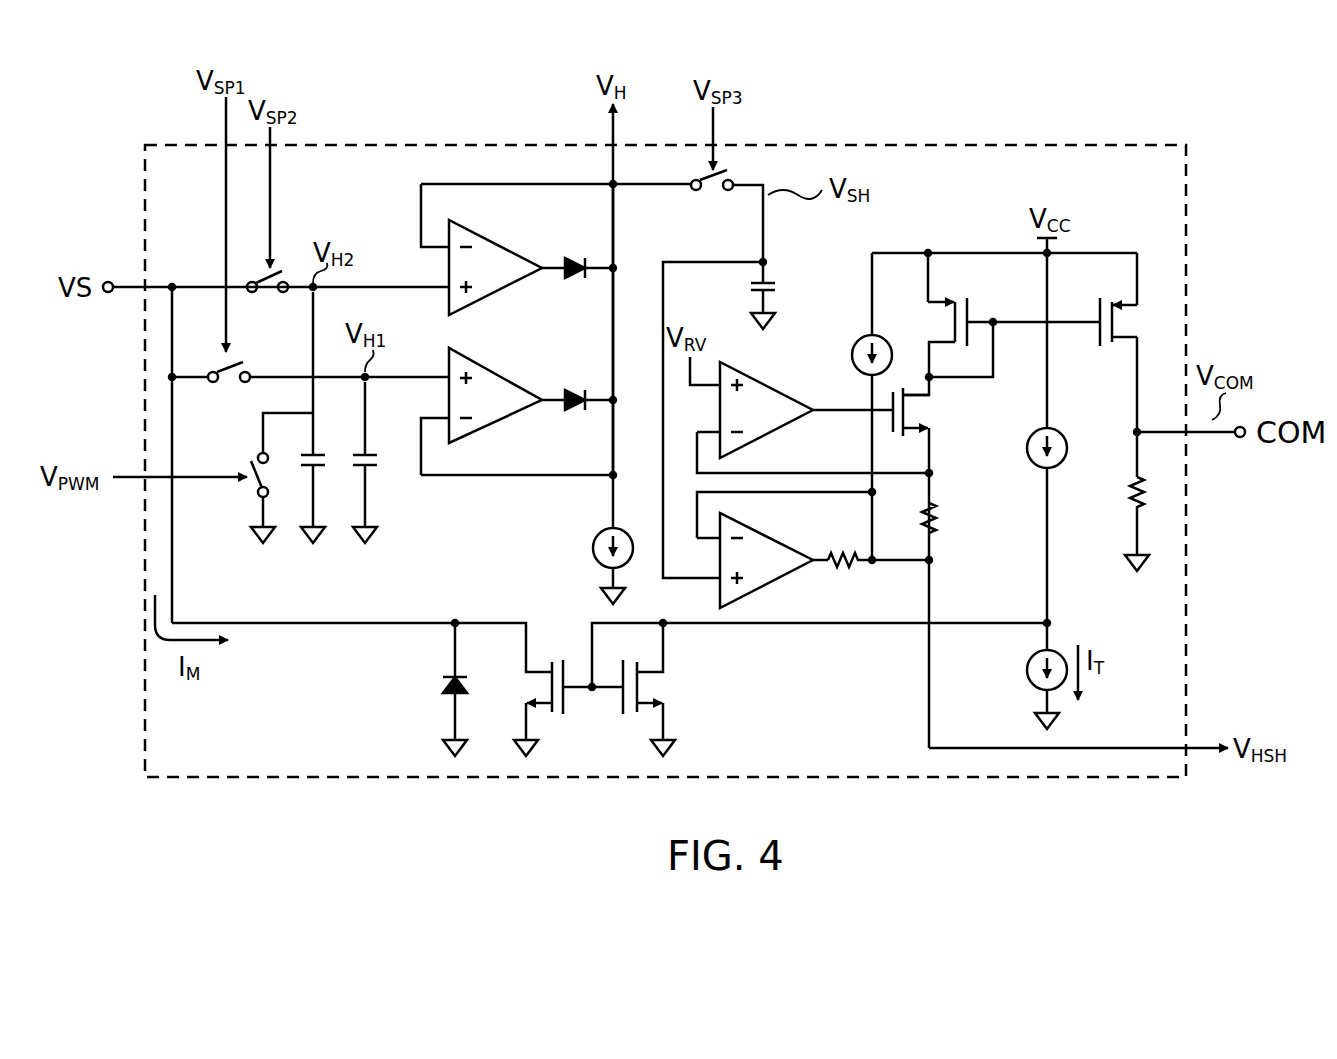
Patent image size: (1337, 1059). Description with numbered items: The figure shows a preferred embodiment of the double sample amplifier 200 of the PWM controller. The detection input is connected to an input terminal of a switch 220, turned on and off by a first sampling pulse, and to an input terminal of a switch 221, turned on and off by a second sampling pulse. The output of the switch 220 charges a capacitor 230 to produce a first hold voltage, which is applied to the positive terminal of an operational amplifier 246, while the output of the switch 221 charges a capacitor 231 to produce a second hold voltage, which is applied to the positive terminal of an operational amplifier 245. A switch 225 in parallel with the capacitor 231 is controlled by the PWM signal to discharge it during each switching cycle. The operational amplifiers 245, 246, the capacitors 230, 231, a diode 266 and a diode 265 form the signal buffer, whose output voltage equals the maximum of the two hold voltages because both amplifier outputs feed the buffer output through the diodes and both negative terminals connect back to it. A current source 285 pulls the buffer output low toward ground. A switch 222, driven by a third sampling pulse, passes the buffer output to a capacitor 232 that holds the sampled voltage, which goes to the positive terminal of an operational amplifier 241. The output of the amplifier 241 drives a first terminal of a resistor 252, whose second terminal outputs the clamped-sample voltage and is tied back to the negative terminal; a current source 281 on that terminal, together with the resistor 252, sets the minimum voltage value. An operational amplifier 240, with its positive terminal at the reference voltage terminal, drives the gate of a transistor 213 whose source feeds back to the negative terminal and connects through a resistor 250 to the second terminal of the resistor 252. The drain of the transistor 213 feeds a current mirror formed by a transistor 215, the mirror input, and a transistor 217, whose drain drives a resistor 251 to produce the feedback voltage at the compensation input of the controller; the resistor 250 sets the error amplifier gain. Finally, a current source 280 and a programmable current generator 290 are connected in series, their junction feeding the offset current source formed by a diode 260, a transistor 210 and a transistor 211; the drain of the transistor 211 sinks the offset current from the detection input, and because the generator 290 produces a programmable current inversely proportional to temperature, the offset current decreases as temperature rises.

The double sample amplifier 200 is at (1188, 189).
The transistor 210 is at (665, 688).
The transistor 211 is at (560, 712).
The transistor 213 is at (925, 415).
The transistor 215 is at (967, 300).
The transistor 217 is at (1138, 318).
The switch 220 is at (222, 385).
The switch 221 is at (262, 295).
The switch 222 is at (706, 193).
The switch 225 is at (248, 492).
The capacitor 230 is at (358, 470).
The capacitor 231 is at (305, 470).
The capacitor 232 is at (775, 270).
The operational amplifier 240 is at (767, 380).
The operational amplifier 241 is at (775, 590).
The operational amplifier 245 is at (505, 240).
The operational amplifier 246 is at (485, 436).
The resistor 250 is at (940, 522).
The resistor 251 is at (1150, 495).
The resistor 252 is at (845, 578).
The diode 260 is at (432, 680).
The diode 265 is at (572, 282).
The diode 266 is at (572, 414).
The current source 280 is at (1063, 468).
The current source 281 is at (857, 337).
The current source 285 is at (592, 550).
The programmable current generator 290 is at (1026, 672).